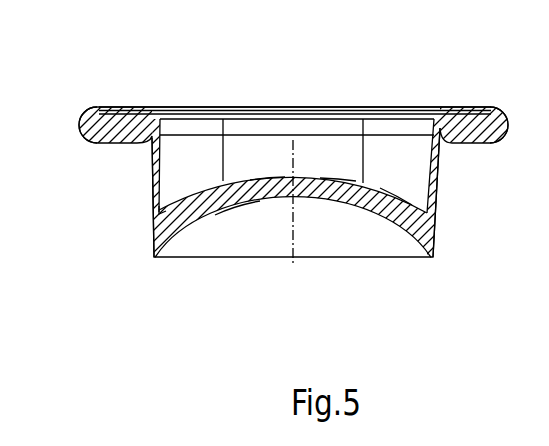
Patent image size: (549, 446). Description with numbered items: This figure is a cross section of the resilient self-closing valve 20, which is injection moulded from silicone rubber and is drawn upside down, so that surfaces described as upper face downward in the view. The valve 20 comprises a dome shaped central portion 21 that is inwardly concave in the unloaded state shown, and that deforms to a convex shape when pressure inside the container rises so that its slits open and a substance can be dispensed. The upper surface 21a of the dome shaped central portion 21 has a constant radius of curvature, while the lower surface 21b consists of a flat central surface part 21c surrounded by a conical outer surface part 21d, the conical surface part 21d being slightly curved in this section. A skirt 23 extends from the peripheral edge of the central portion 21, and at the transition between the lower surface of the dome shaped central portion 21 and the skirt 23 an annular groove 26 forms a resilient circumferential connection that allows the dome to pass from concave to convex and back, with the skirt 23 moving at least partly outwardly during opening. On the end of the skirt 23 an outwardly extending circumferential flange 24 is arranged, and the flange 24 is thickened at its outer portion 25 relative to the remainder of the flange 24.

The self-closing valve 20 is at (91, 89).
The dome shaped central portion 21 is at (372, 220).
The upper surface 21a is at (234, 217).
The lower surface 21b is at (342, 156).
The flat central surface part 21c is at (271, 166).
The conical outer surface part 21d is at (401, 172).
The skirt 23 is at (440, 180).
The circumferential flange 24 is at (453, 127).
The outer portion of the flange 25 is at (488, 118).
The annular groove 26 is at (169, 202).